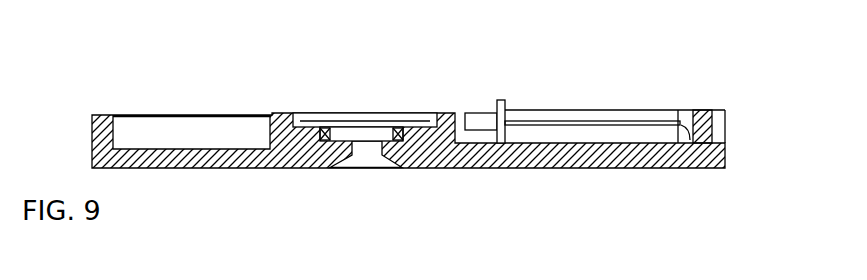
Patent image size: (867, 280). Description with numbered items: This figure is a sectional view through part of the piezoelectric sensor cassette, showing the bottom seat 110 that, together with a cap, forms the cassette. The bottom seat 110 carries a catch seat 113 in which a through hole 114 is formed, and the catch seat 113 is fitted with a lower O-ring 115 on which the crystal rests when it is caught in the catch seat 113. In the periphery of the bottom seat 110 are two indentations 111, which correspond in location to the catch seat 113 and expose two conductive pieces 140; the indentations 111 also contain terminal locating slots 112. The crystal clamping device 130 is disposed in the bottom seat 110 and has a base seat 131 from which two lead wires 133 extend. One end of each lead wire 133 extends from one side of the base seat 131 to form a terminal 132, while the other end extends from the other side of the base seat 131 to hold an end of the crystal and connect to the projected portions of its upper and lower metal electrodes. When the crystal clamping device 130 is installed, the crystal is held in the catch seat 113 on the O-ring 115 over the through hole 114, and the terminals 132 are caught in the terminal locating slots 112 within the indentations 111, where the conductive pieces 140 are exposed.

The bottom seat 110 is at (650, 155).
The indentation 111 is at (727, 122).
The terminal locating slot 112 is at (602, 110).
The catch seat 113 is at (300, 113).
The through hole 114 is at (365, 152).
The lower O-ring 115 is at (400, 127).
The crystal clamping device 130 is at (502, 100).
The base seat 131 is at (470, 112).
The terminal 132 is at (552, 112).
The lead wire 133 is at (317, 116).
The conductive piece 140 is at (705, 110).